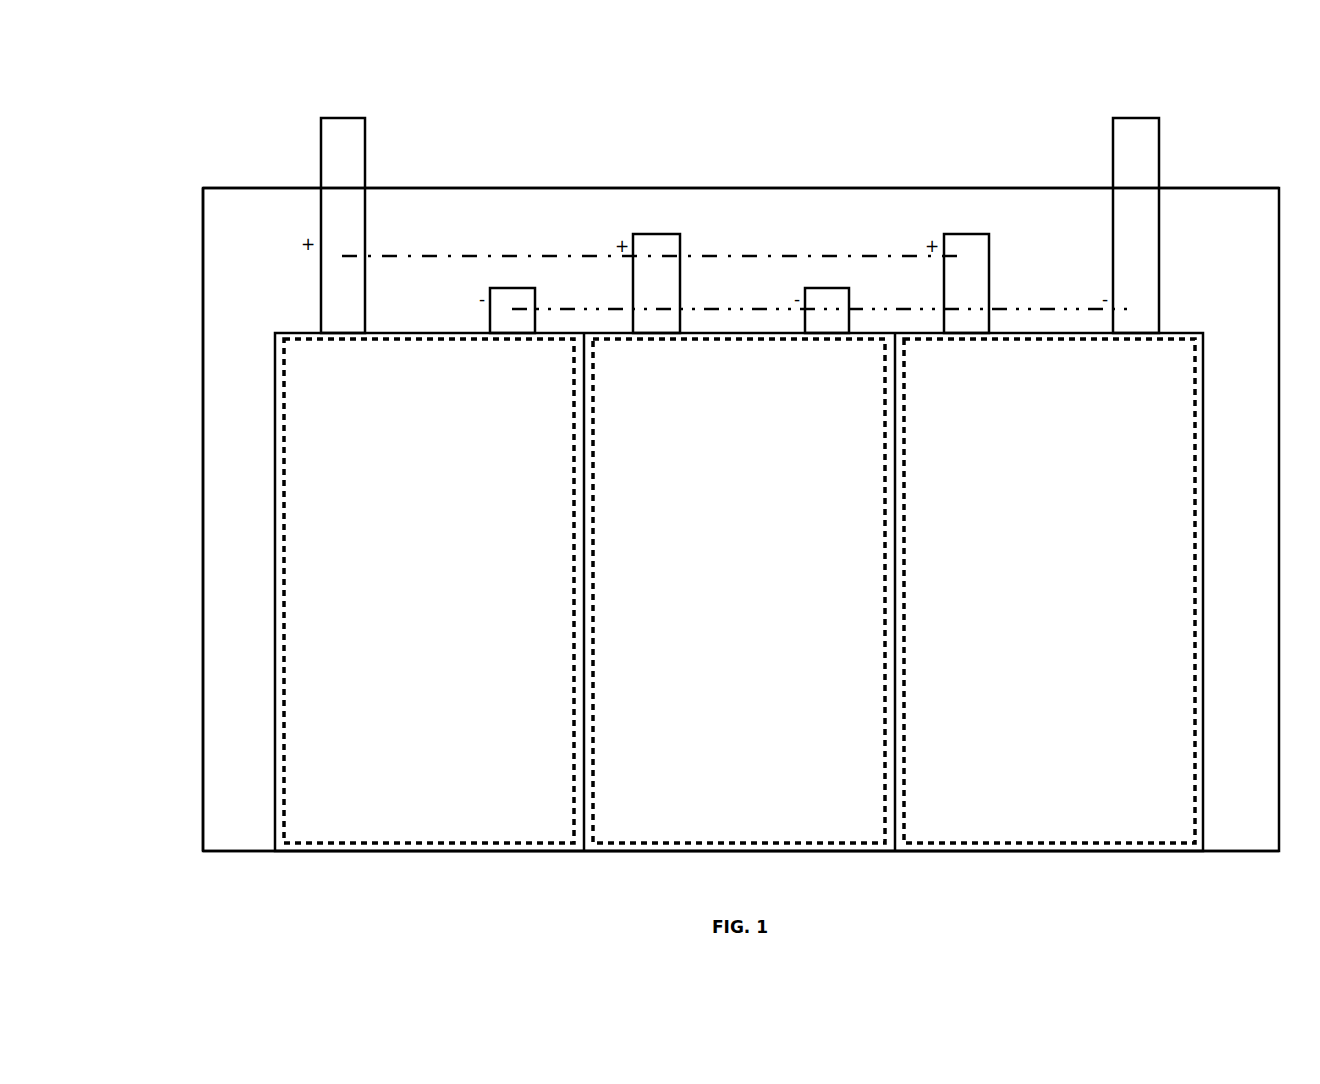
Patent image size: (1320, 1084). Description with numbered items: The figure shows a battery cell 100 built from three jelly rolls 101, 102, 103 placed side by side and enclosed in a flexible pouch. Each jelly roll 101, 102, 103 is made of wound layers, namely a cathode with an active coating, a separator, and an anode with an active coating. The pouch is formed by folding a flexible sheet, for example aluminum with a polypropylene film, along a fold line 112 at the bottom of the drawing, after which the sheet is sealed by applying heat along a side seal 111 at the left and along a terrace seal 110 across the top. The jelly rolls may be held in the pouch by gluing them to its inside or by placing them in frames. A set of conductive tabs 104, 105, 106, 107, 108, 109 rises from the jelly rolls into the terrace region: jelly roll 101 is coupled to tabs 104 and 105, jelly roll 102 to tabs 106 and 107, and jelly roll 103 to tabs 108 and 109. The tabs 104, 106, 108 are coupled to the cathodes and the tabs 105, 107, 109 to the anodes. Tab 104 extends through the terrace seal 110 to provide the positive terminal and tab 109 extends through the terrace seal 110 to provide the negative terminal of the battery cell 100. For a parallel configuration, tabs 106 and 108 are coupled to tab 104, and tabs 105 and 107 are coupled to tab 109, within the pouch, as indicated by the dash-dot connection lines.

The battery cell 100 is at (490, 188).
The jelly roll 101 is at (429, 591).
The jelly roll 102 is at (734, 592).
The jelly roll 103 is at (1045, 592).
The conductive tab 104 is at (322, 178).
The conductive tab 105 is at (489, 322).
The conductive tab 106 is at (680, 246).
The conductive tab 107 is at (849, 299).
The conductive tab 108 is at (988, 290).
The conductive tab 109 is at (1159, 180).
The terrace seal 110 is at (883, 188).
The side seal 111 is at (202, 562).
The fold line 112 is at (815, 853).